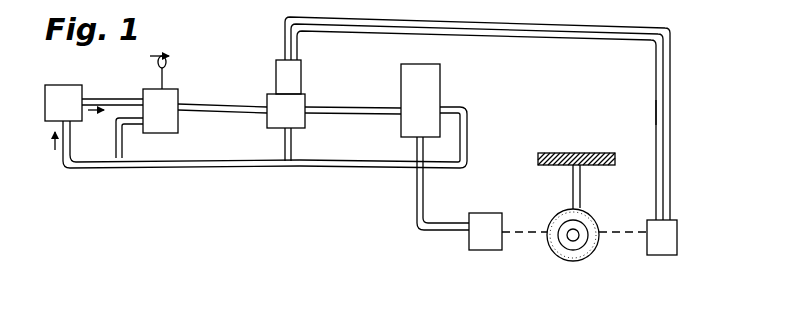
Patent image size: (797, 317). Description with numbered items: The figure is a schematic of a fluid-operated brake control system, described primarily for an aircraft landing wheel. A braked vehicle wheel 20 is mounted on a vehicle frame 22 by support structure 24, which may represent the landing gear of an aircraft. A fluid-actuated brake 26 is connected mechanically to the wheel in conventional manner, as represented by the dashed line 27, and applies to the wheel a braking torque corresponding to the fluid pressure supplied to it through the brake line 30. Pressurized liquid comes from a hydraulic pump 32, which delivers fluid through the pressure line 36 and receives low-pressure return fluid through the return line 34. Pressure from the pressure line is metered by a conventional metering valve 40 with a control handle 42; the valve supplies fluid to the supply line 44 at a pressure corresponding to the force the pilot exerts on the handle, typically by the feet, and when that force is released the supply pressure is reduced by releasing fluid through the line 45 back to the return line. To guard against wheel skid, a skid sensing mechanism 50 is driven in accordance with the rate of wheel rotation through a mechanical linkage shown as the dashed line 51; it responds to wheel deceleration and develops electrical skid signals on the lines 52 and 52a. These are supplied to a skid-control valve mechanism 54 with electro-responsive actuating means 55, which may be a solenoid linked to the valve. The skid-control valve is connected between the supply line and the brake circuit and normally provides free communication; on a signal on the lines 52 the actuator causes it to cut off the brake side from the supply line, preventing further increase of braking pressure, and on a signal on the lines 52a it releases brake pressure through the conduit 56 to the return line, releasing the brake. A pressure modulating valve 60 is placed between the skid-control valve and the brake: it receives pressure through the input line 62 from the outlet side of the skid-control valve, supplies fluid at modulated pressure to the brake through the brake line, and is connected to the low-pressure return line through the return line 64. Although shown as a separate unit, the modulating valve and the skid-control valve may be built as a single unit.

The braked vehicle wheel 20 is at (571, 261).
The vehicle frame 22 is at (597, 161).
The support structure 24 is at (572, 186).
The brake 26 is at (478, 251).
The dashed line 27 is at (522, 243).
The brake line 30 is at (412, 218).
The hydraulic pump 32 is at (74, 85).
The return line 34 is at (74, 166).
The pressure line 36 is at (108, 97).
The metering valve 40 is at (180, 101).
The control handle 42 is at (168, 70).
The supply line 44 is at (231, 103).
The line 45 is at (122, 148).
The skid sensing mechanism 50 is at (656, 252).
The dashed line 51 is at (622, 240).
The lines 52 is at (658, 208).
The lines 52a is at (665, 109).
The skid-control valve mechanism 54 is at (305, 103).
The electro-responsive actuating means 55 is at (302, 77).
The conduit 56 is at (292, 148).
The pressure modulating valve 60 is at (440, 99).
The input line 62 is at (354, 116).
The return line 64 is at (357, 171).